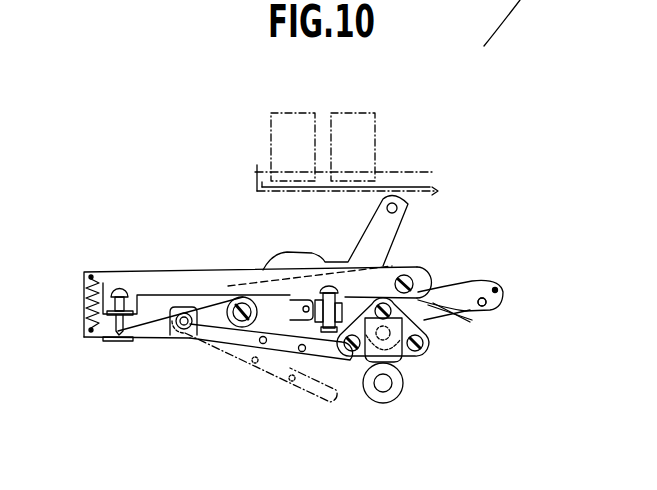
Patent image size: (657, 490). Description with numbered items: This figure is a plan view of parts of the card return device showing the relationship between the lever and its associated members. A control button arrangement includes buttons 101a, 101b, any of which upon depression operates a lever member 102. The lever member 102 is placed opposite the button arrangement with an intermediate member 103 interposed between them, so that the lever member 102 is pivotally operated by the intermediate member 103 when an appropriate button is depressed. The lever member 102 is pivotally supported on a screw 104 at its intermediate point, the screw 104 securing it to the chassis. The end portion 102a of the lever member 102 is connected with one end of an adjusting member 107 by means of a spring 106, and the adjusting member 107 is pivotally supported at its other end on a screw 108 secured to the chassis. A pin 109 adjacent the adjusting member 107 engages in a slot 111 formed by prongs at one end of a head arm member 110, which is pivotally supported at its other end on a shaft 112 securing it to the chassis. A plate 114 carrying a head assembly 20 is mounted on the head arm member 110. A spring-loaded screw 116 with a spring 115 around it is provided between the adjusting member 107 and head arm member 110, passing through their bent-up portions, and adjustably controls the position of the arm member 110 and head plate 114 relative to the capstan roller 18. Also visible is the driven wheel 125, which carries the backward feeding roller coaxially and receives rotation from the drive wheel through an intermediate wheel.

The button 101a is at (288, 121).
The button 101b is at (353, 121).
The driven wheel 125 is at (488, 0).
The intermediate member 103 is at (444, 191).
The adjusting member 107 is at (162, 282).
The spring 106 is at (88, 301).
The end portion of the lever member 102a is at (99, 341).
The pin 109 is at (298, 303).
The screw 104 is at (242, 297).
The lever member 102 is at (288, 262).
The slot 111 is at (298, 303).
The spring 115 is at (345, 300).
The screw 108 is at (421, 280).
The shaft 112 is at (486, 305).
The head arm member 110 is at (446, 316).
The plate 114 is at (421, 354).
The head assembly 20 is at (393, 363).
The capstan roller 18 is at (388, 404).
The spring-loaded screw 116 is at (331, 325).